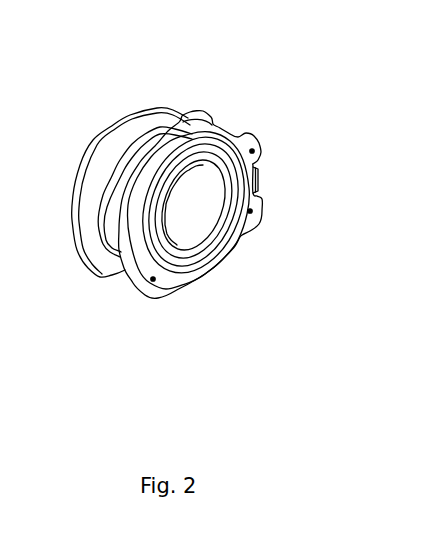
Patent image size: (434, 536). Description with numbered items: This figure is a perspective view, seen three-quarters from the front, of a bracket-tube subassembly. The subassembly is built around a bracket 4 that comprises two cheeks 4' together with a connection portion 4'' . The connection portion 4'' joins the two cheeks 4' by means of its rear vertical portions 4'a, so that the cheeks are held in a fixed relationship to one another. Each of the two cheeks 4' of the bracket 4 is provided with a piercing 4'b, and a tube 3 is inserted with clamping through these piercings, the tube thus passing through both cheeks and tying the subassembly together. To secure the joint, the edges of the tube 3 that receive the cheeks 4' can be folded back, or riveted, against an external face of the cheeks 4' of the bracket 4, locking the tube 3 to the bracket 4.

The tube 3 is at (141, 143).
The bracket 4 is at (228, 156).
The cheek 4' is at (189, 229).
The rear vertical portion 4'a is at (298, 170).
The connection portion 4'' is at (296, 158).
The piercing 4'b is at (235, 234).